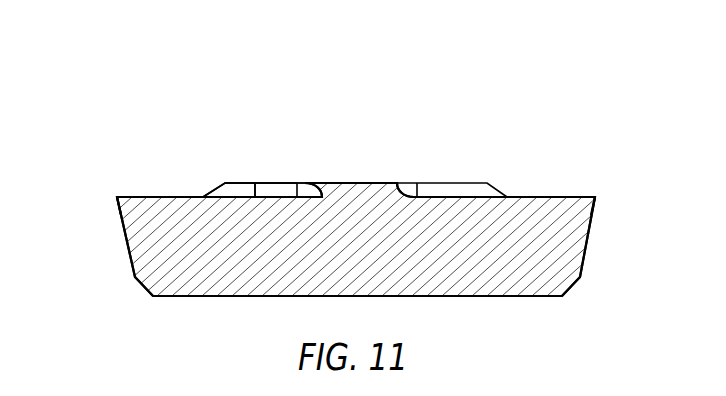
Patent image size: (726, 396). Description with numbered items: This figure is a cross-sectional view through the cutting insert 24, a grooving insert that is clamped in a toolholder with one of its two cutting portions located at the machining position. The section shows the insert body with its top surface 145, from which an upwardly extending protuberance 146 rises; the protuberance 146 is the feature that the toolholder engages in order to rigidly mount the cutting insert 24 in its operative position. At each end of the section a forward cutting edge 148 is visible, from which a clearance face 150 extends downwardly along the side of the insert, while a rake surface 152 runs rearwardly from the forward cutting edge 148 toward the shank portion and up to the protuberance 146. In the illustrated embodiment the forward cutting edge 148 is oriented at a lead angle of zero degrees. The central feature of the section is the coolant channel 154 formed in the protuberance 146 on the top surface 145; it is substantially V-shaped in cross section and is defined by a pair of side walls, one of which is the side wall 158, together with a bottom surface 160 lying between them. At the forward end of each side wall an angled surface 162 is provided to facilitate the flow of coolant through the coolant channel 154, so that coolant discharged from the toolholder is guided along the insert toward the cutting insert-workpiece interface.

The cutting insert 24 is at (603, 160).
The top surface 145 is at (337, 172).
The protuberance 146 is at (357, 182).
The forward cutting edge 148 is at (117, 197).
The clearance face 150 is at (125, 232).
The rake surface 152 is at (157, 197).
The coolant channel 154 is at (277, 177).
The side wall 158 is at (254, 188).
The bottom surface 160 is at (257, 183).
The angled surface 162 is at (212, 191).